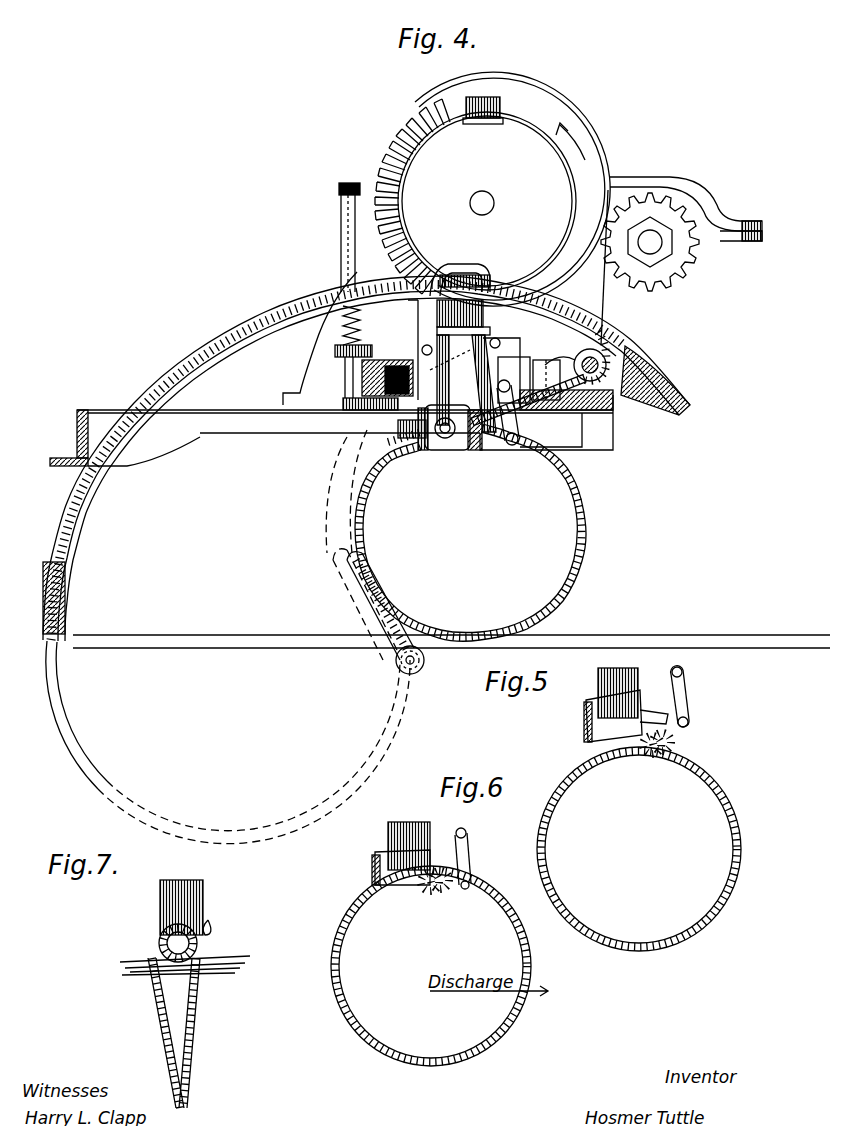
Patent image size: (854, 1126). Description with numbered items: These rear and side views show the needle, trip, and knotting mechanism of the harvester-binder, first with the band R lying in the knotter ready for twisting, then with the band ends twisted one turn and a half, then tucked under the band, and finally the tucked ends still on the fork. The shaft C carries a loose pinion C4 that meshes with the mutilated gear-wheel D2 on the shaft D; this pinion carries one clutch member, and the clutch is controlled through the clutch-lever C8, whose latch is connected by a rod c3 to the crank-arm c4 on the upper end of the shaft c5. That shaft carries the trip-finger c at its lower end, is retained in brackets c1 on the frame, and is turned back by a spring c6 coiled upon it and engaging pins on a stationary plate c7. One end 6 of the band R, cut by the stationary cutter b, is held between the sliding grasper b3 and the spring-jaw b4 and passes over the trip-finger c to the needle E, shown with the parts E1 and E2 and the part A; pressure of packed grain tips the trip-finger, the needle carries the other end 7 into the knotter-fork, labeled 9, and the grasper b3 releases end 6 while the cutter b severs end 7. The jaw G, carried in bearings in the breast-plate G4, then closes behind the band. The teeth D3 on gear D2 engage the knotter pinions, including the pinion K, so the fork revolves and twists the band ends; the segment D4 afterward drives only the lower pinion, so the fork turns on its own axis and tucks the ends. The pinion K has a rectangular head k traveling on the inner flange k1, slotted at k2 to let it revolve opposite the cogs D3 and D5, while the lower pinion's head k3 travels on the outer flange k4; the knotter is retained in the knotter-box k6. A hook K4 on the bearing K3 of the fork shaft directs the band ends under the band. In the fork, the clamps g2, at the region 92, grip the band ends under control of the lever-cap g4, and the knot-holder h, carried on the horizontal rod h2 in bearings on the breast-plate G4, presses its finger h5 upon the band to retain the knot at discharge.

In FIG. 4, the shaft D is at (482, 203).
In FIG. 4, the gear-wheel D2 is at (512, 189).
In FIG. 4, the teeth D3 is at (402, 230).
In FIG. 4, the segment D4 is at (412, 196).
In FIG. 4, the cogs D5 is at (495, 107).
In FIG. 4, the head k is at (488, 278).
In FIG. 4, the inner flange k1 is at (545, 138).
In FIG. 4, the slot k2 is at (482, 124).
In FIG. 4, the head k3 is at (405, 320).
In FIG. 4, the outer flange k4 is at (580, 262).
In FIG. 7, the outer flange k4 is at (214, 928).
In FIG. 4, the knotter-box k6 is at (464, 352).
In FIG. 4, the pinion K is at (490, 285).
In FIG. 4, the bearing K3 is at (455, 450).
In FIG. 4, the hook K4 is at (445, 438).
In FIG. 4, the shaft C is at (650, 242).
In FIG. 4, the pinion C4 is at (690, 268).
In FIG. 4, the clutch-lever C8 is at (686, 198).
In FIG. 4, the trip-finger c is at (345, 398).
In FIG. 4, the brackets c1 is at (341, 200).
In FIG. 4, the rod c3 is at (601, 267).
In FIG. 4, the crank-arm c4 is at (337, 184).
In FIG. 4, the shaft c5 is at (345, 252).
In FIG. 4, the spring c6 is at (360, 322).
In FIG. 4, the stationary plate c7 is at (372, 350).
In FIG. 4, the stationary cutter b is at (514, 379).
In FIG. 4, the sliding grasper b3 is at (538, 380).
In FIG. 4, the spring-jaw b4 is at (557, 349).
In FIG. 4, the knot-holder h is at (518, 436).
In FIG. 5, the knot-holder h is at (685, 696).
In FIG. 6, the knot-holder h is at (470, 858).
In FIG. 5, the horizontal rod h2 is at (682, 672).
In FIG. 5, the finger h5 is at (688, 722).
In FIG. 4, the needle E is at (366, 560).
In FIG. 4, the needle arm extension E1 is at (380, 598).
In FIG. 4, the needle pivot E2 is at (424, 660).
In FIG. 4, the bar A is at (451, 631).
In FIG. 4, the jaw G is at (400, 415).
In FIG. 4, the breast-plate G4 is at (625, 425).
In FIG. 4, the clamps g2 is at (400, 432).
In FIG. 4, the lever-cap g4 is at (475, 450).
In FIG. 5, the lever-cap g4 is at (572, 728).
In FIG. 6, the lever-cap g4 is at (360, 868).
In FIG. 4, the twister head 9 is at (418, 440).
In FIG. 5, the twister head 9 is at (625, 738).
In FIG. 6, the twister head 9 is at (402, 853).
In FIG. 7, the twister head 9 is at (205, 948).
In FIG. 5, the rope knot 92 is at (668, 740).
In FIG. 4, the end of the band 7 is at (400, 438).
In FIG. 5, the end of the band 7 is at (599, 777).
In FIG. 4, the end of the band 6 is at (539, 404).
In FIG. 5, the end of the band 6 is at (681, 780).
In FIG. 4, the band R is at (470, 532).
In FIG. 5, the band R is at (639, 849).
In FIG. 6, the band R is at (431, 966).
In FIG. 7, the band R is at (160, 942).